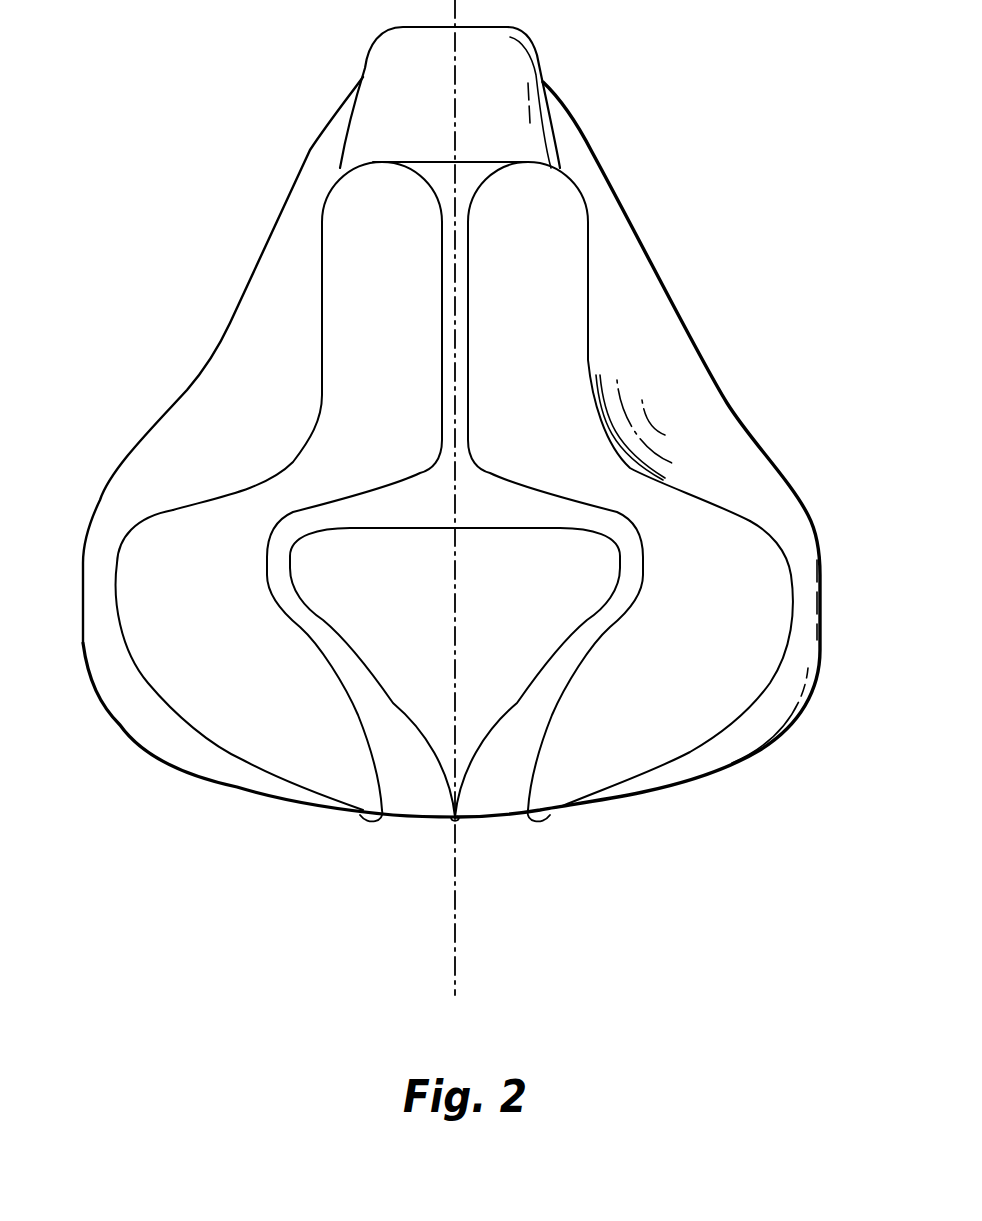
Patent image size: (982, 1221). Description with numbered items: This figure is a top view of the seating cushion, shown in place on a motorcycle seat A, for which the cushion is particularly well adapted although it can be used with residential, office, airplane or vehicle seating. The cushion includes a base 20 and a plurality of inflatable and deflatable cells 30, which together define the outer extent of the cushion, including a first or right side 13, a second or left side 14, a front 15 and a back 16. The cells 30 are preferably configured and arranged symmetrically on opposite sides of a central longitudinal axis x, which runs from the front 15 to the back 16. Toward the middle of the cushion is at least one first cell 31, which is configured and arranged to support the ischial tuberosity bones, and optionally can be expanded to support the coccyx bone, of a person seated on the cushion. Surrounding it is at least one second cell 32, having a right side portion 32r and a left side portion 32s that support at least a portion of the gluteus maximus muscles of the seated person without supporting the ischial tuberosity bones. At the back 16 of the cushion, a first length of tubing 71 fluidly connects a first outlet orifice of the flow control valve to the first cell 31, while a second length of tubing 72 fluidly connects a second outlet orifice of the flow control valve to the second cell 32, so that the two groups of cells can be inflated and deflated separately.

The first or right side 13 is at (767, 533).
The second or left side 14 is at (312, 398).
The front 15 is at (528, 163).
The back 16 is at (327, 792).
The base 20 is at (449, 514).
The cells 30 is at (238, 683).
The first cell 31 is at (500, 618).
The second cell 32 is at (454, 660).
The left side portion 32s is at (243, 637).
The right side portion 32r is at (750, 638).
The first length of tubing 71 is at (459, 821).
The second length of tubing 72 is at (379, 818).
The motorcycle seat A is at (258, 347).
The central longitudinal axis x is at (455, 950).